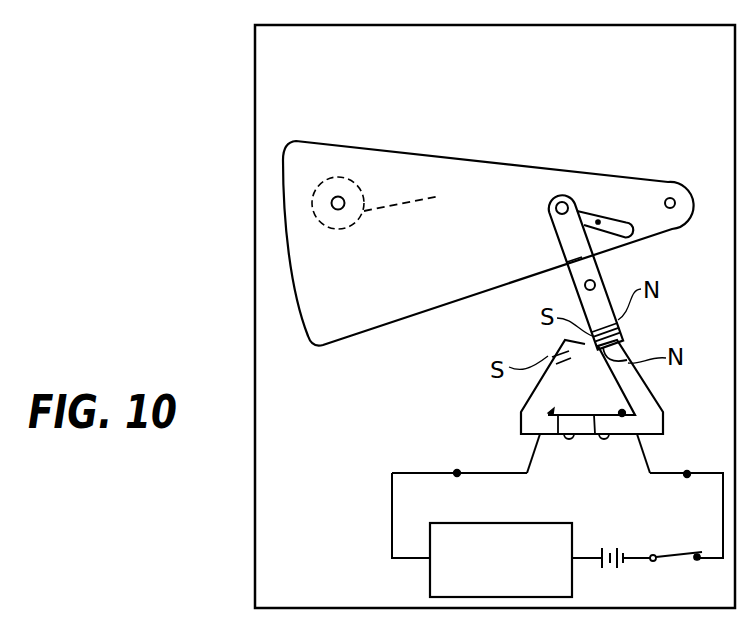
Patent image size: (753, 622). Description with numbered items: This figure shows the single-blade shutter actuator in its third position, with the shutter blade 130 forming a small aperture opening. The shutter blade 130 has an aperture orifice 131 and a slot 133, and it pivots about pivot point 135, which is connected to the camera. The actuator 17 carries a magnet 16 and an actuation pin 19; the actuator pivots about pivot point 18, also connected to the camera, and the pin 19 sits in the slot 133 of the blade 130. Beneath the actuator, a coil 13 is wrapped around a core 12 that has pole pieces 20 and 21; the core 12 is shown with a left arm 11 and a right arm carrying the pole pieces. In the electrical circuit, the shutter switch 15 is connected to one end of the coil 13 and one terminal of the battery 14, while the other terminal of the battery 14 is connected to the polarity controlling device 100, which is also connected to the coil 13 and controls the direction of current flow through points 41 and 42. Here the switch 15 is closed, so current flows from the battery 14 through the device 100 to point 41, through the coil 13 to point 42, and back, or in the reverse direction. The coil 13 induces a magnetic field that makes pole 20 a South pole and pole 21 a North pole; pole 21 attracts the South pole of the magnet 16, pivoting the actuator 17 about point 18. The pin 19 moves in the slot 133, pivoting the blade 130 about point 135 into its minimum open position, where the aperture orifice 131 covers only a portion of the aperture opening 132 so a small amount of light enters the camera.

The shutter blade 130 is at (421, 167).
The aperture orifice 131 is at (338, 197).
The aperture opening 132 is at (473, 221).
The slot 133 is at (600, 221).
The pivot point 135 is at (671, 197).
The actuator 17 is at (562, 243).
The actuation pin 19 is at (558, 200).
The pivot point 18 is at (596, 284).
The magnet 16 is at (580, 299).
The pole piece 20 is at (548, 352).
The pole piece 21 is at (628, 348).
The left yoke arm 11 is at (524, 399).
The core 12 is at (642, 393).
The coil 13 is at (600, 440).
The point 41 is at (457, 473).
The circuit point 42 is at (687, 473).
The polarity controlling device 100 is at (517, 527).
The battery 14 is at (618, 567).
The shutter switch 15 is at (673, 552).